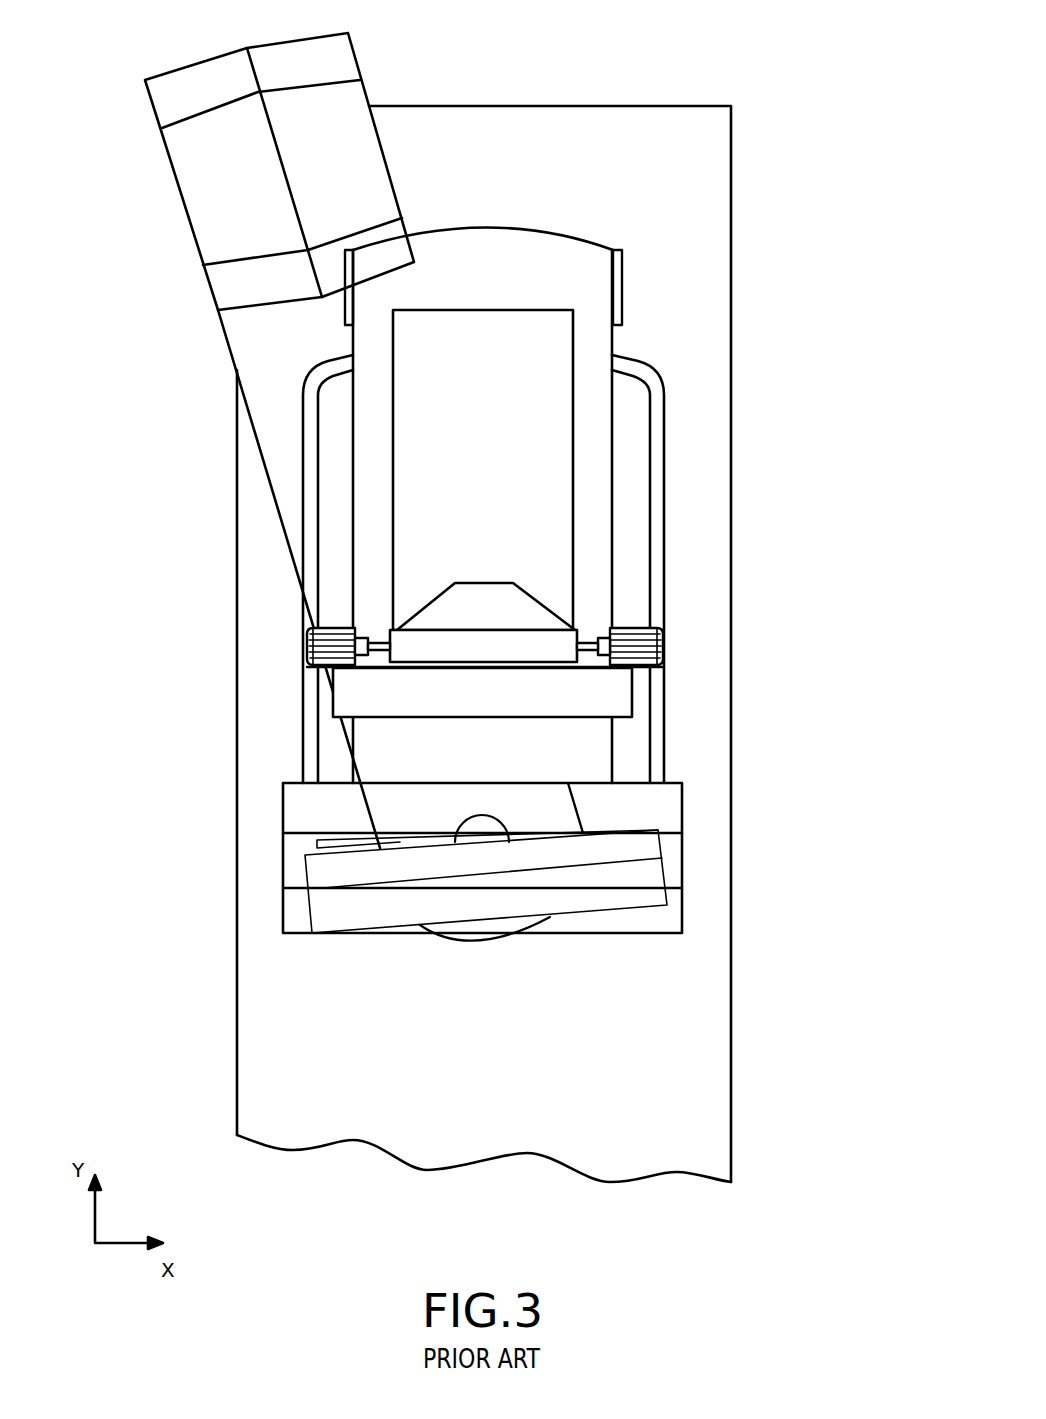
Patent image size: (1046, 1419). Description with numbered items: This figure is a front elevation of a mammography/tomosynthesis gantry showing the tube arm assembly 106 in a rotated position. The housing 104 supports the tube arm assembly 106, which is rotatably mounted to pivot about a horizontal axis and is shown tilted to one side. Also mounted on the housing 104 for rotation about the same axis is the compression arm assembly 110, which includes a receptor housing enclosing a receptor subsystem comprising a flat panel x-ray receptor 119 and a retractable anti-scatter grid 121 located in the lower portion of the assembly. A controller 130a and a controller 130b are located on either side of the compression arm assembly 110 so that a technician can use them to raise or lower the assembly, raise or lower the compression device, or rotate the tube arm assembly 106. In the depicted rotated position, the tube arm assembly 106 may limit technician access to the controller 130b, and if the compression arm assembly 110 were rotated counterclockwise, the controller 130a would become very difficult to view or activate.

The housing 104 is at (717, 158).
The tube arm assembly 106 is at (202, 215).
The compression arm assembly 110 is at (600, 283).
The flat panel x-ray receptor 119 is at (652, 847).
The retractable anti-scatter grid 121 is at (657, 830).
The controller 130a is at (615, 250).
The controller 130b is at (345, 311).